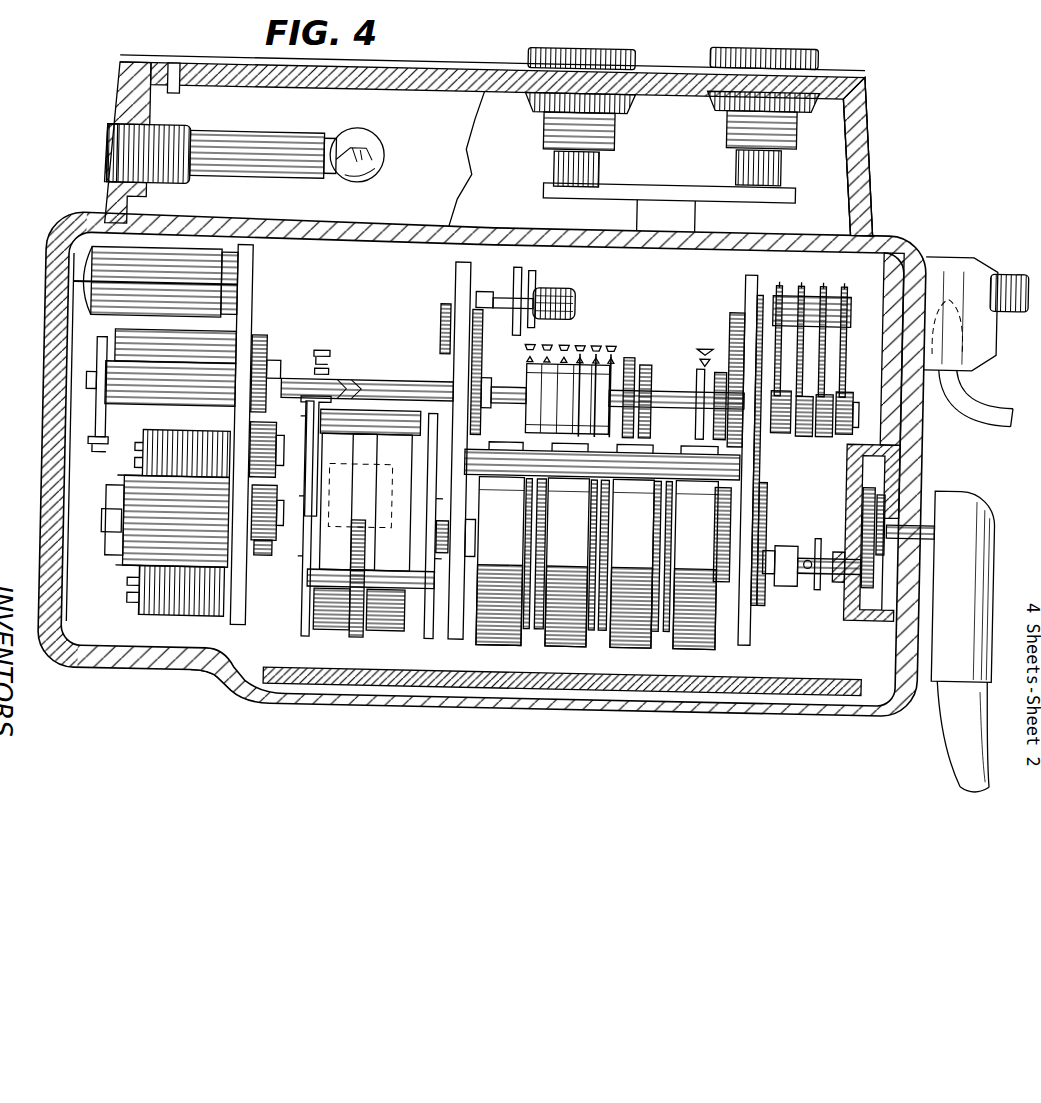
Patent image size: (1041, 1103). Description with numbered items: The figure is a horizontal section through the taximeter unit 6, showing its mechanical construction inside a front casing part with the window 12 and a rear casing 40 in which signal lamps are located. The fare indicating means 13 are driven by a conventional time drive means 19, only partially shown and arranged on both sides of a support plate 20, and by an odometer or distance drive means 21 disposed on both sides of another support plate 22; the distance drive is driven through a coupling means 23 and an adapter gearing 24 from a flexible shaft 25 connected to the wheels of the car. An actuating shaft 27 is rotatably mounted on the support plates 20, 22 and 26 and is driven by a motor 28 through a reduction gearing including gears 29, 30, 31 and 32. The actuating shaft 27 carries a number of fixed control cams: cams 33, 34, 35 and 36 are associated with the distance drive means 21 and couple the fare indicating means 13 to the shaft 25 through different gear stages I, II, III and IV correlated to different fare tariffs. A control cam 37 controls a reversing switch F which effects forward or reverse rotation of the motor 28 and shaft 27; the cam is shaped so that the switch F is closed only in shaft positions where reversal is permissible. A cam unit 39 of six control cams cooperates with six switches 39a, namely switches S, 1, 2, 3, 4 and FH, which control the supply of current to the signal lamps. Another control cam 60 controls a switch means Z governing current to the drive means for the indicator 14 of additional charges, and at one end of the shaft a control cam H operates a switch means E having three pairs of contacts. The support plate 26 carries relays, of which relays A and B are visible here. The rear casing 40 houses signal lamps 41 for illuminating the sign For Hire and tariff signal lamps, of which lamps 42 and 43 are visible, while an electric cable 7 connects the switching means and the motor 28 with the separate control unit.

The taximeter unit 6 is at (241, 684).
The electric cable 7 is at (984, 400).
The window 12 is at (444, 690).
The fare indicating means 13 is at (505, 645).
The indicator 14 is at (340, 636).
The time drive means 19 is at (445, 295).
The support plate 20 is at (450, 640).
The distance drive means 21 is at (854, 292).
The support plate 22 is at (754, 630).
The coupling means 23 is at (802, 580).
The adapter gearing 24 is at (855, 608).
The flexible shaft 25 is at (958, 728).
The support plate 26 is at (252, 288).
The actuating shaft 27 is at (384, 386).
The motor 28 is at (168, 612).
The gear 29 is at (266, 560).
The gear 30 is at (275, 497).
The gear 31 is at (250, 455).
The gear 32 is at (266, 345).
The cam 33 is at (781, 427).
The cam 34 is at (803, 432).
The cam 35 is at (824, 430).
The cam 36 is at (843, 430).
The control cam 37 is at (697, 388).
The cam unit 39 is at (621, 356).
The switches 39a is at (570, 292).
The rear casing 40 is at (856, 143).
The signal lamp 41 is at (373, 182).
The signal lamp 42 is at (808, 58).
The signal lamp 43 is at (628, 60).
The control cam 60 is at (318, 400).
The relay A is at (80, 272).
The relay B is at (140, 404).
The switch means E is at (92, 444).
The control cam H is at (107, 362).
The switch means Z is at (320, 352).
The switch S is at (521, 348).
The switch 1 is at (545, 342).
The switch 2 is at (562, 342).
The switch 3 is at (578, 342).
The switch 4 is at (594, 342).
The switch FH is at (609, 342).
The reversing switch F is at (703, 345).
The gear stage I is at (843, 279).
The gear stage II is at (821, 279).
The gear stage III is at (799, 278).
The gear stage IV is at (777, 278).